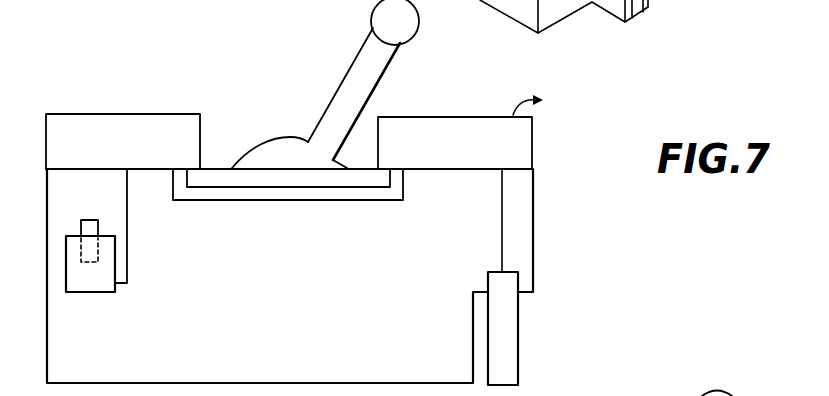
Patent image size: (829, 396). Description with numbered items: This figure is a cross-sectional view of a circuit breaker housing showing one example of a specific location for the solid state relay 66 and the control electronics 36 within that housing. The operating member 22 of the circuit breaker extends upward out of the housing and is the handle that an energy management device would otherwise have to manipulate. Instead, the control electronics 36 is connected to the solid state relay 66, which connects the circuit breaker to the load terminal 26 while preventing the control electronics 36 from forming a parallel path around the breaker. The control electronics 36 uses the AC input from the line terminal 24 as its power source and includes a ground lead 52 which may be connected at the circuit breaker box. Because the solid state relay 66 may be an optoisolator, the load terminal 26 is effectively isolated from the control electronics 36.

The operating member 22 is at (405, 22).
The line terminal 24 is at (507, 335).
The load terminal 26 is at (103, 278).
The control electronics 36 is at (522, 143).
The ground lead 52 is at (549, 102).
The solid state relay 66 is at (170, 122).